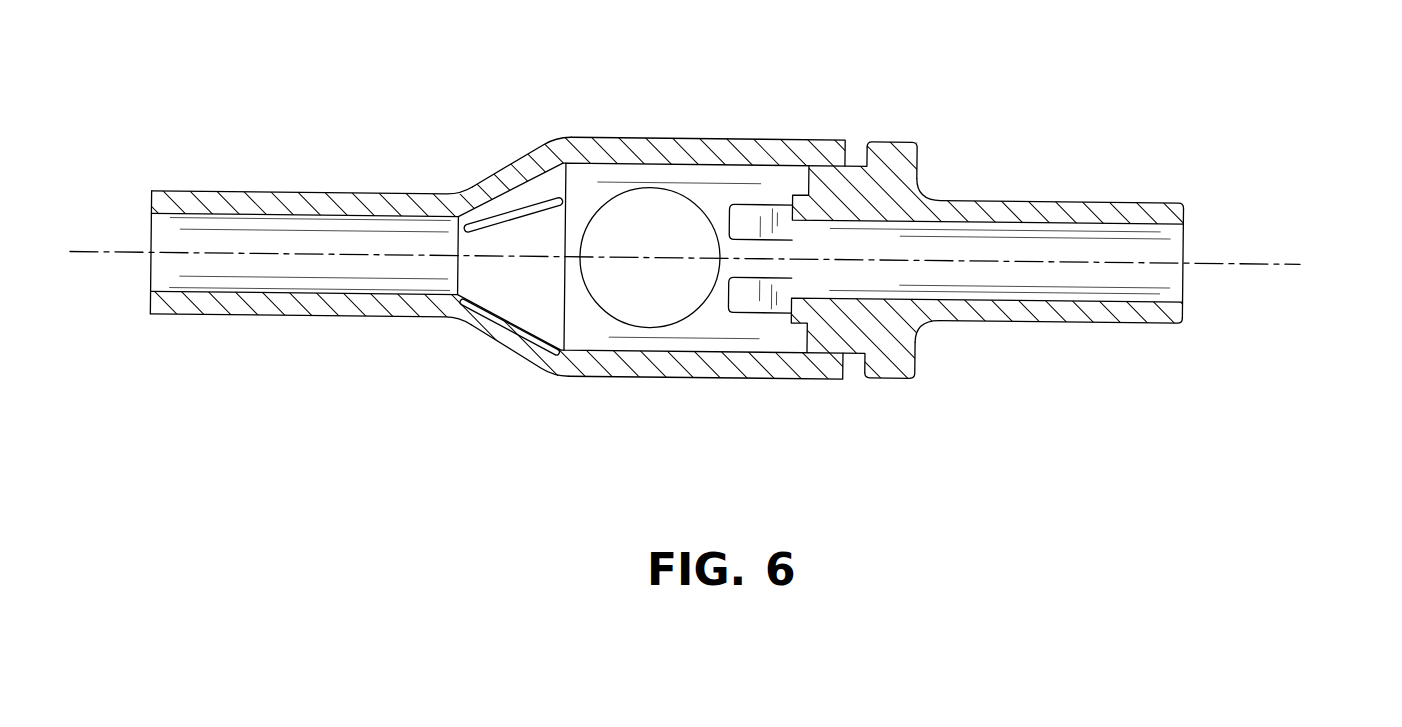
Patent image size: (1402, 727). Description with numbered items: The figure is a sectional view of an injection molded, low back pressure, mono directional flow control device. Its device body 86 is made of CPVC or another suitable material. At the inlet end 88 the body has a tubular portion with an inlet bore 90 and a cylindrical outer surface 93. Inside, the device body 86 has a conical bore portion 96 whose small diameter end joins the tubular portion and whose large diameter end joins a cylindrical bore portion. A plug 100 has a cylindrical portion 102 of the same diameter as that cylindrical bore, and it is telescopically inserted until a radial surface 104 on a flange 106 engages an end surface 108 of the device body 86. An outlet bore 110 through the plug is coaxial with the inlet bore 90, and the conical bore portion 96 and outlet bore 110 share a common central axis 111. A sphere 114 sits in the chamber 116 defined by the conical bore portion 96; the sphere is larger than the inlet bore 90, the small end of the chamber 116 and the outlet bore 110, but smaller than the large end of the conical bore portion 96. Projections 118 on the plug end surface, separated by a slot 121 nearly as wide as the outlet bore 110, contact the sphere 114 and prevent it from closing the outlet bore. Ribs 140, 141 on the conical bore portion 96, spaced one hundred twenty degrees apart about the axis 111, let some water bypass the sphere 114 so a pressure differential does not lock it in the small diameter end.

The device body 86 is at (518, 395).
The inlet end 88 is at (150, 203).
The inlet bore 90 is at (151, 270).
The cylindrical outer surface 93 is at (262, 193).
The conical bore portion 96 is at (500, 292).
The plug 100 is at (701, 244).
The cylindrical portion 102 is at (816, 360).
The radial surface 104 is at (866, 155).
The flange 106 is at (890, 378).
The end surface 108 is at (858, 160).
The outlet bore 110 is at (1170, 224).
The central axis 111 is at (1257, 258).
The sphere 114 is at (668, 330).
The chamber 116 is at (552, 185).
The projections 118 is at (725, 213).
The slot 121 is at (773, 220).
The rib 140 is at (513, 213).
The rib 141 is at (517, 318).